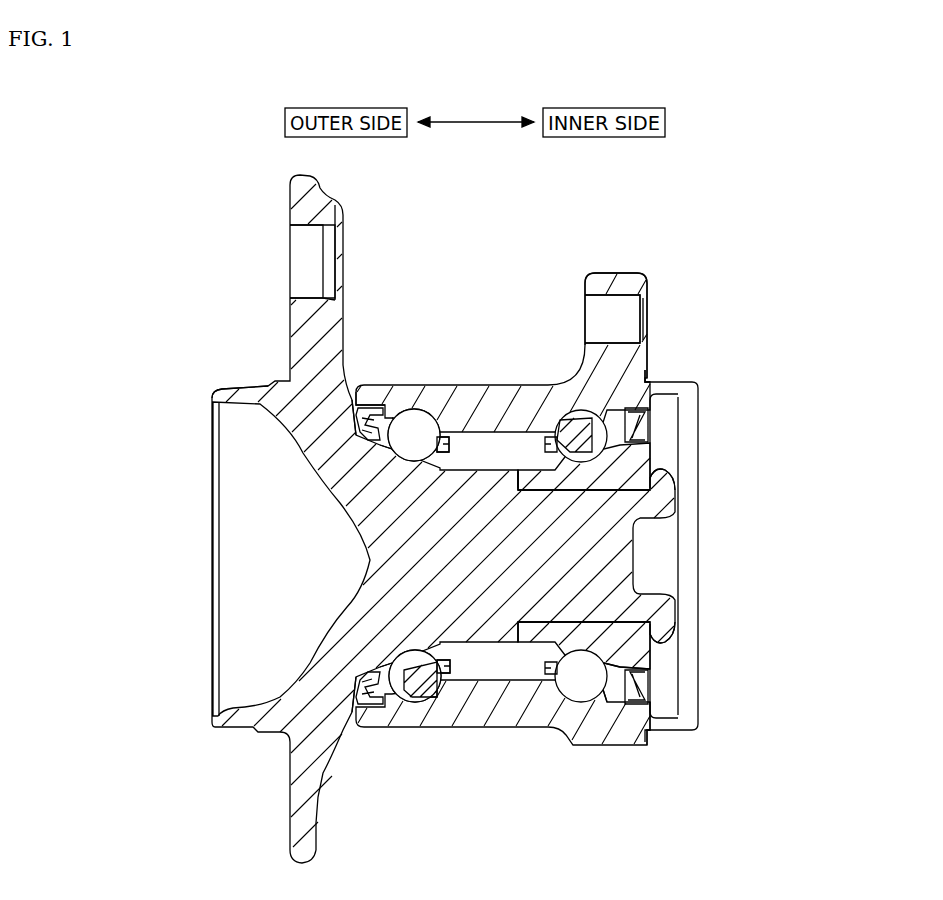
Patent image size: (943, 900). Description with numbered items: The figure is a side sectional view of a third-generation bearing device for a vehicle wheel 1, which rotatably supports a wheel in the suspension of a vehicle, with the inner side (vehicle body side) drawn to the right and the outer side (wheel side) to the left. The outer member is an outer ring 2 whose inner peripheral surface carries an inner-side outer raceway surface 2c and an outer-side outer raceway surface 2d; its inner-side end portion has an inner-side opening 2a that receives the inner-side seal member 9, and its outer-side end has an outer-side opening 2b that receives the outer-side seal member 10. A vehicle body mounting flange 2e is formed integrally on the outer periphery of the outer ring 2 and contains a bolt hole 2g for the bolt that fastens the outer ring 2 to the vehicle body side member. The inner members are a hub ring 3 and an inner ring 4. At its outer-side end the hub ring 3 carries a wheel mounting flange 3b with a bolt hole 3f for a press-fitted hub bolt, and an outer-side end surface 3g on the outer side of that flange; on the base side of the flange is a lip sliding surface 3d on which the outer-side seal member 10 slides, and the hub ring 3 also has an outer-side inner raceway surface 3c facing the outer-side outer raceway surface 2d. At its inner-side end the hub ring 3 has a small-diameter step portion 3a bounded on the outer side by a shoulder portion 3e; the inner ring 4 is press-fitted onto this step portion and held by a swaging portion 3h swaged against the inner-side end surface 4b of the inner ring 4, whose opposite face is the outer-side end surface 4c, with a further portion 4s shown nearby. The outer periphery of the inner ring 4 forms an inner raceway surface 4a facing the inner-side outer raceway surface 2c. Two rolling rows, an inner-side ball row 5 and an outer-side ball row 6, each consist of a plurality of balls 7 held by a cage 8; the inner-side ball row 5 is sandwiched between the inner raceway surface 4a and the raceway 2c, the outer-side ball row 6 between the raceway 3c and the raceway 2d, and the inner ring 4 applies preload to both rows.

The bearing device for a vehicle wheel 1 is at (708, 350).
The outer ring 2 is at (488, 364).
The inner-side opening 2a is at (636, 655).
The outer-side opening 2b is at (392, 453).
The inner-side outer raceway surface 2c is at (584, 702).
The outer-side outer raceway surface 2d is at (428, 418).
The vehicle body mounting flange 2e is at (648, 282).
The bolt hole 2g is at (630, 346).
The hub ring 3 is at (258, 348).
The small-diameter step portion 3a is at (536, 640).
The wheel mounting flange 3b is at (290, 200).
The outer-side inner raceway surface 3c is at (412, 414).
The lip sliding surface 3d is at (365, 428).
The shoulder portion 3e is at (524, 490).
The bolt hole 3f is at (305, 228).
The outer-side end surface 3g is at (212, 390).
The swaging portion 3h is at (665, 618).
The inner ring 4 is at (641, 457).
The inner raceway surface 4a is at (568, 688).
The inner-side end surface 4b is at (640, 663).
The outer-side end surface 4c is at (514, 490).
The small-diameter portion 4s is at (647, 376).
The inner-side ball row 5 is at (497, 537).
The outer-side ball row 6 is at (440, 772).
The ball 7 is at (578, 431).
The cage 8 is at (556, 428).
The inner-side seal member 9 is at (641, 422).
The outer-side seal member 10 is at (357, 682).